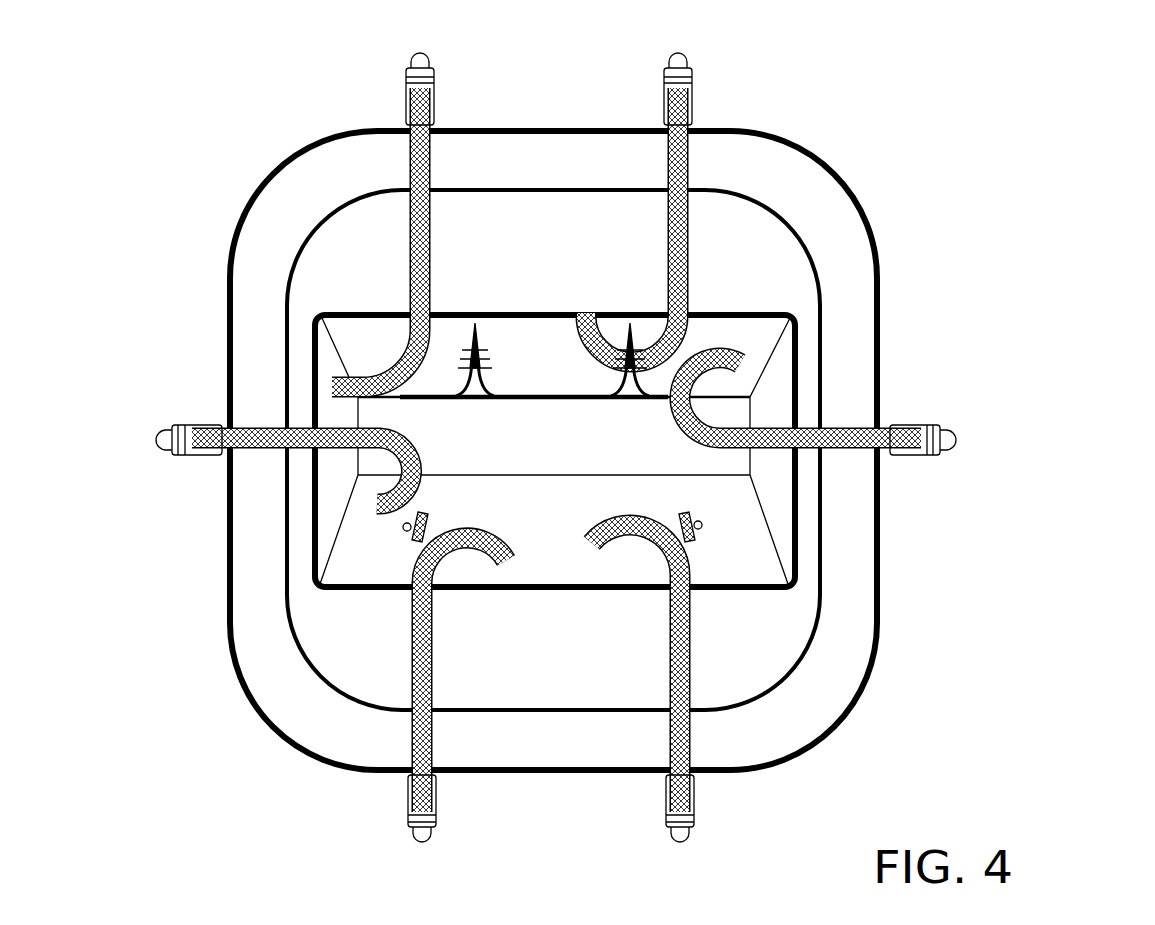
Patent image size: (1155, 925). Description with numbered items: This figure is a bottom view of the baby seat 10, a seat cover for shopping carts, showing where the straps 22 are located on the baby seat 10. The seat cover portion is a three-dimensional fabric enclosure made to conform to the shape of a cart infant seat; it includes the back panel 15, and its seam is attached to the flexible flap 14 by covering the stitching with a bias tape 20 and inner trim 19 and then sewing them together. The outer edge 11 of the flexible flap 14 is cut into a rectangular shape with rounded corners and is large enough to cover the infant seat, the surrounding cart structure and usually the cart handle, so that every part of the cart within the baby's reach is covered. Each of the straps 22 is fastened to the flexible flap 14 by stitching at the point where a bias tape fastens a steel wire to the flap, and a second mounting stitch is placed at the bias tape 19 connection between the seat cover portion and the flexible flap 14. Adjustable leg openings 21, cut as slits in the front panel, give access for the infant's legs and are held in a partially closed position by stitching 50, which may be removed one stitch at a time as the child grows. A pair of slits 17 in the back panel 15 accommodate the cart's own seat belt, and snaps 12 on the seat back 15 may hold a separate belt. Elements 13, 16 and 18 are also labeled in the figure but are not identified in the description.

The baby seat 10 is at (584, 441).
The outer edge 11 is at (785, 157).
The snaps 12 is at (702, 521).
The electrode terminal cap 13 is at (947, 437).
The flexible flap 14 is at (692, 536).
The back panel 15 is at (728, 550).
The cavity 16 is at (572, 685).
The slits 17 is at (413, 540).
The base plate 18 is at (452, 392).
The inner trim 19 is at (345, 312).
The bias tape 20 is at (625, 483).
The adjustable leg openings 21 is at (557, 313).
The straps 22 is at (407, 90).
The stitching 50 is at (466, 343).